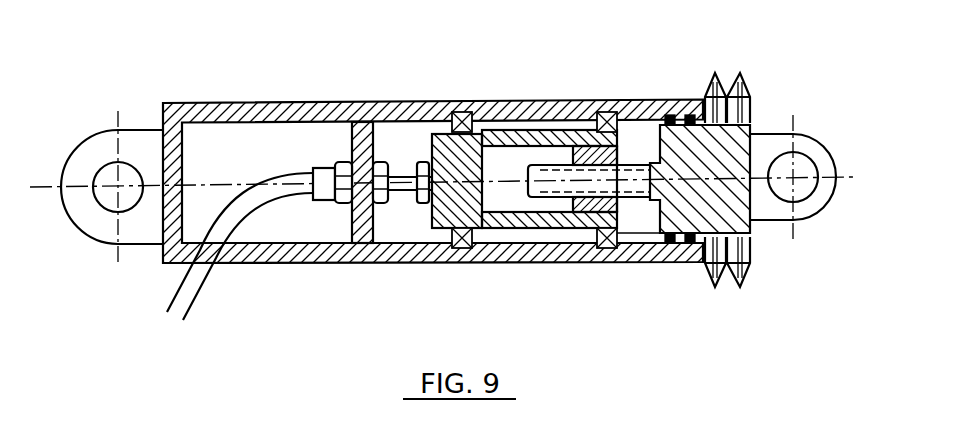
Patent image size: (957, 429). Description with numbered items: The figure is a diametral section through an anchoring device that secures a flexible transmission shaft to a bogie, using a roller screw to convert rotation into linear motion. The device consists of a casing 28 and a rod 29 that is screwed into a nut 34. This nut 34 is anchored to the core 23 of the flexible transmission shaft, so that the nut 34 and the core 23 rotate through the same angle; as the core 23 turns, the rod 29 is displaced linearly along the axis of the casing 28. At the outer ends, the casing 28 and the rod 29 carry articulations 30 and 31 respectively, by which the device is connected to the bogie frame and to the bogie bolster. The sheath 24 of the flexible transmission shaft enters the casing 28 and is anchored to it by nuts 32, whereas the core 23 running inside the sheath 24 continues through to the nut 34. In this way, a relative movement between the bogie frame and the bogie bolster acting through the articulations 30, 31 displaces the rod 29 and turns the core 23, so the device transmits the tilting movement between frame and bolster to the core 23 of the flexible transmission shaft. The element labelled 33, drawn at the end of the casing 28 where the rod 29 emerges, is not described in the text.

The core 23 is at (402, 200).
The sheath 24 is at (195, 287).
The casing 28 is at (363, 113).
The rod 29 is at (725, 147).
The articulation 30 is at (102, 243).
The articulation 31 is at (805, 220).
The nuts 32 is at (385, 203).
The bellows 33 is at (720, 257).
The nut 34 is at (592, 210).